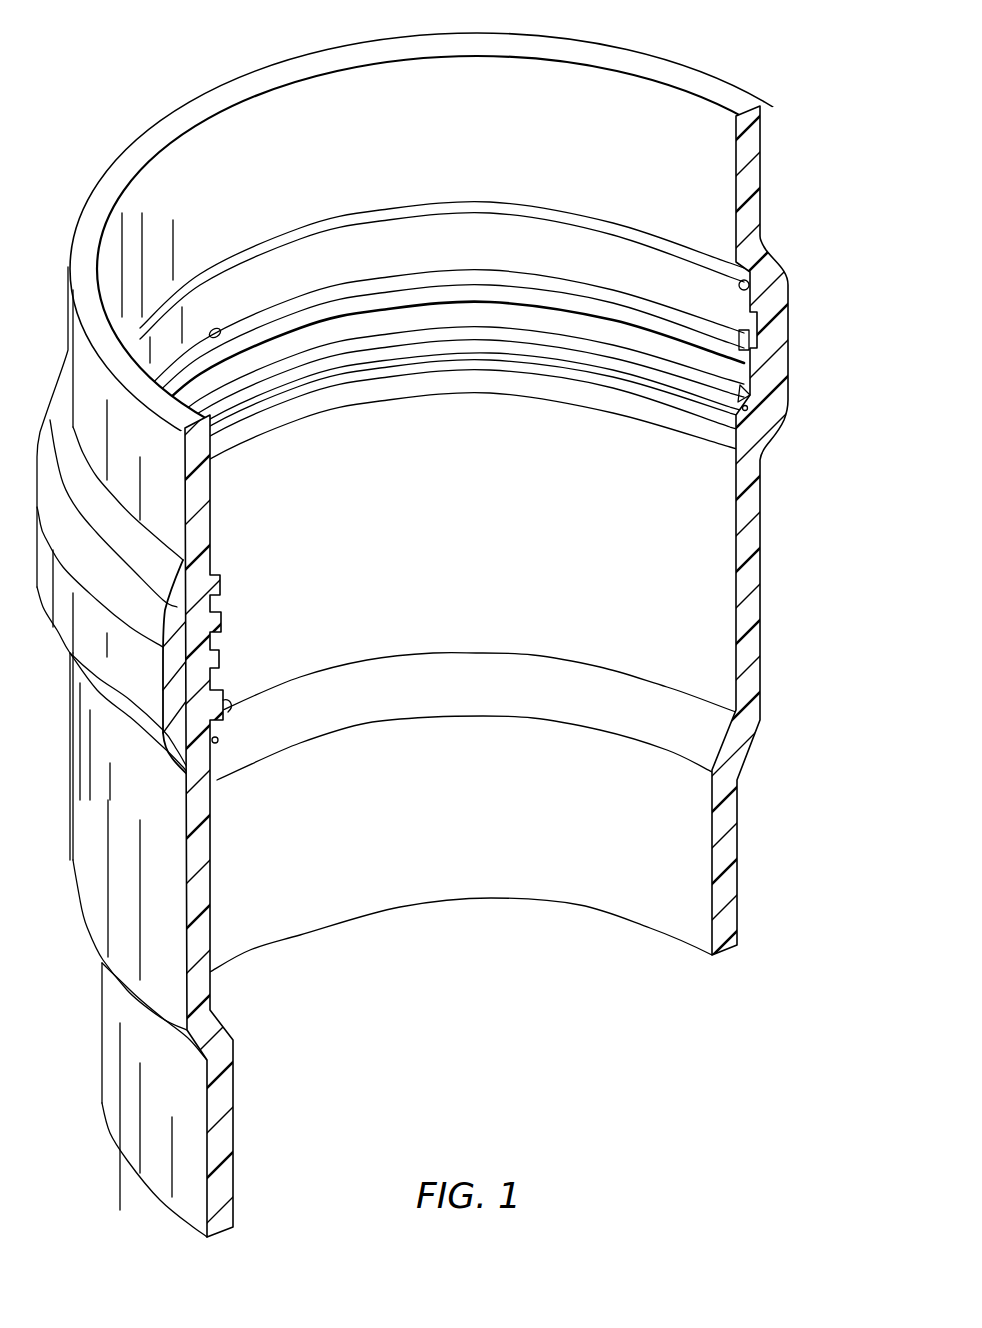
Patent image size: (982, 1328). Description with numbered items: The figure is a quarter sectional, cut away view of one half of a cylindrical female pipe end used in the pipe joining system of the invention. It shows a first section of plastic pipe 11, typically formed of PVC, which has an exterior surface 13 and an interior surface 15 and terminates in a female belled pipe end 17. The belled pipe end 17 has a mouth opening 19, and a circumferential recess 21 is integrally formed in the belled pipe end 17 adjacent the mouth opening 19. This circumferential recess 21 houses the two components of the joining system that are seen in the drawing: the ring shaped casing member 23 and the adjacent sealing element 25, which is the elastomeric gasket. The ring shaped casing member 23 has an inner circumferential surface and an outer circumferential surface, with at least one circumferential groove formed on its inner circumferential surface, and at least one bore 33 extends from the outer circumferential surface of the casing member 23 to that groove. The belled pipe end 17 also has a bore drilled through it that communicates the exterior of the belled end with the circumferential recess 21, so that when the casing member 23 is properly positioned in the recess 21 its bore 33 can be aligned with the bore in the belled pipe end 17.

The first section of plastic pipe 11 is at (756, 849).
The exterior surface 13 is at (158, 1178).
The interior surface 15 is at (609, 900).
The female belled pipe end 17 is at (791, 249).
The mouth opening 19 is at (664, 110).
The circumferential recess 21 is at (210, 677).
The ring shaped casing member 23 is at (771, 313).
The sealing element 25 is at (624, 409).
The bore 33 is at (221, 327).